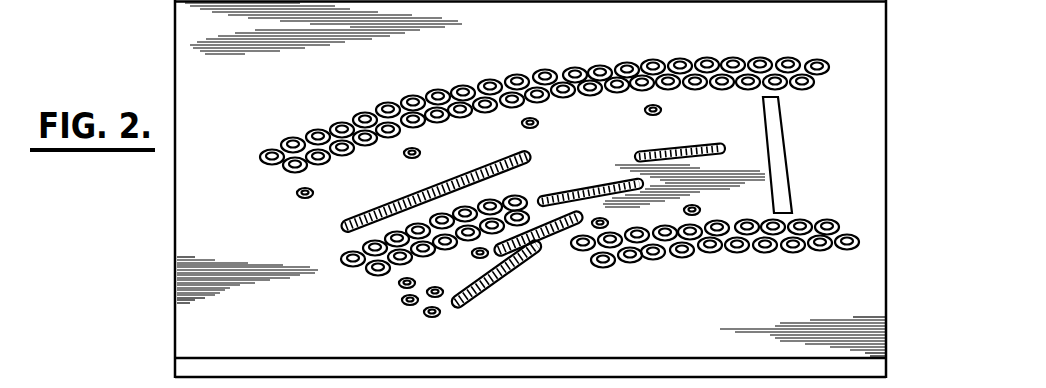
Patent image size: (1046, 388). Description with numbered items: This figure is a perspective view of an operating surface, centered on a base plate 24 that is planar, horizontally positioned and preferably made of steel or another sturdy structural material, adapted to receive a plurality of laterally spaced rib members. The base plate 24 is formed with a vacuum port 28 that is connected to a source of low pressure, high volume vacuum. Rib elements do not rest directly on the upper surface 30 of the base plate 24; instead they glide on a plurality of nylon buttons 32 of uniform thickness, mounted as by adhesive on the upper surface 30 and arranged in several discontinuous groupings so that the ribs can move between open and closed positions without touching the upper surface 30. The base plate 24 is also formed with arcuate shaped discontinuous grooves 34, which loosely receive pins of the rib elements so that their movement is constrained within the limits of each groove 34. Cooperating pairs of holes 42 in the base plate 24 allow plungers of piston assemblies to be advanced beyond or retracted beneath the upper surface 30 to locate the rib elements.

The base plate 24 is at (893, 151).
The vacuum port 28 is at (787, 147).
The upper surface 30 is at (692, 325).
The nylon buttons 32 is at (383, 105).
The arcuate shaped discontinuous grooves 34 is at (647, 150).
The holes 42 is at (405, 158).